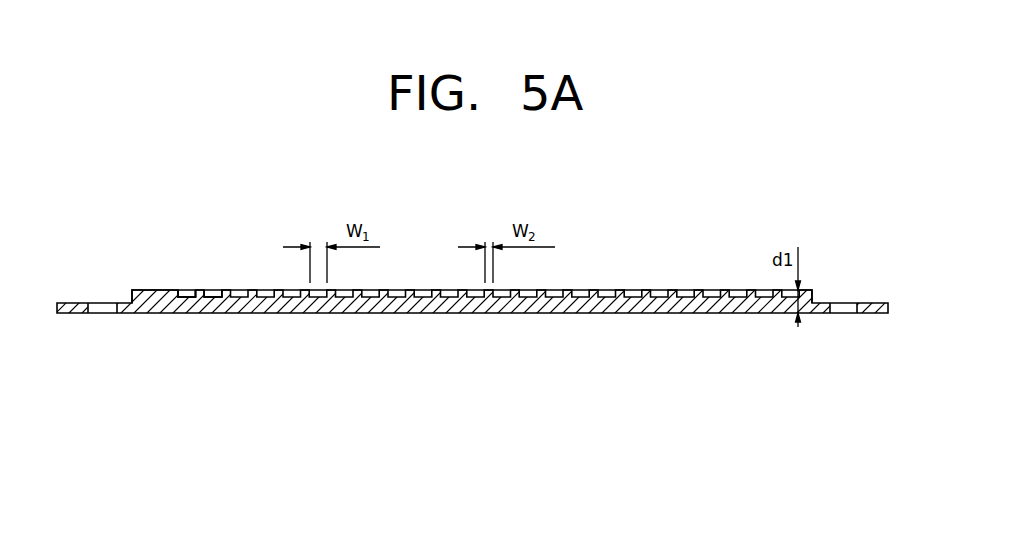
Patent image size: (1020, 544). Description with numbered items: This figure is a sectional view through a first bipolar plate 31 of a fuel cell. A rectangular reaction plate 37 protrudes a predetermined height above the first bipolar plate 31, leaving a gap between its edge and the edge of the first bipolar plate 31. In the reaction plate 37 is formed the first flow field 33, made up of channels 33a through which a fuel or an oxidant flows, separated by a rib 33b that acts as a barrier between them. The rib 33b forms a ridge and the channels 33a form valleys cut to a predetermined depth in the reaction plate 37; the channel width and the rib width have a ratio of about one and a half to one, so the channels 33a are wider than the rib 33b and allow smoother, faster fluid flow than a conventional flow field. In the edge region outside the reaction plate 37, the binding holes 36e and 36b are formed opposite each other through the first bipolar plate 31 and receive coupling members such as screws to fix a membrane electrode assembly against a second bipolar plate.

The first bipolar plate 31 is at (830, 367).
The first flow field 33 is at (242, 216).
The channels 33a is at (188, 290).
The rib 33b is at (226, 290).
The binding hole 36e is at (103, 303).
The binding hole 36b is at (843, 303).
The reaction plate 37 is at (150, 290).